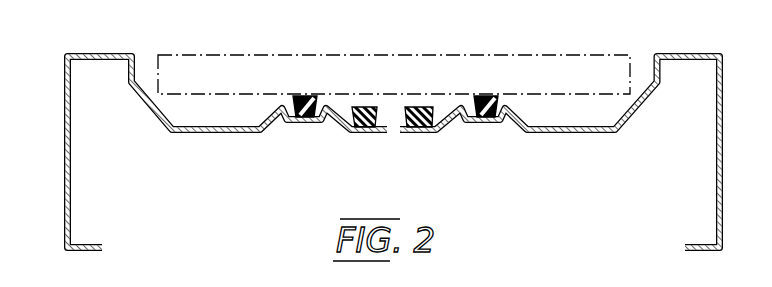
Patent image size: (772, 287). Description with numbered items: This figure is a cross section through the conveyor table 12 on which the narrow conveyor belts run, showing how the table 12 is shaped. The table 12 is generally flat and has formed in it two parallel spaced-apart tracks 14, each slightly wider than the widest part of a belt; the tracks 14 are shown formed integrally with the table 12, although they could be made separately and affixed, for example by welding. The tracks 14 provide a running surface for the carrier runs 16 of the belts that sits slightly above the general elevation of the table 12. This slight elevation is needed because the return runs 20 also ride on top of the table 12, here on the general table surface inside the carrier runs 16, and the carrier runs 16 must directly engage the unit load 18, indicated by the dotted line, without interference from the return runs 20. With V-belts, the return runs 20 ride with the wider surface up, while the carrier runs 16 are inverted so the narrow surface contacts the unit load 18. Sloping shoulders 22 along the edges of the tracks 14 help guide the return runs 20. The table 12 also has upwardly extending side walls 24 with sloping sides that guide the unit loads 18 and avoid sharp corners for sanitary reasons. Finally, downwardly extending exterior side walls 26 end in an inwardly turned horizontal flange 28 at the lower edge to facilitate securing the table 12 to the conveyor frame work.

The table 12 is at (76, 218).
The tracks 14 is at (289, 132).
The carrier runs 16 is at (298, 96).
The unit load 18 is at (502, 62).
The return runs 20 is at (413, 105).
The sloping shoulders 22 is at (332, 110).
The side walls 24 is at (146, 109).
The exterior side walls 26 is at (58, 165).
The horizontal flange 28 is at (81, 254).